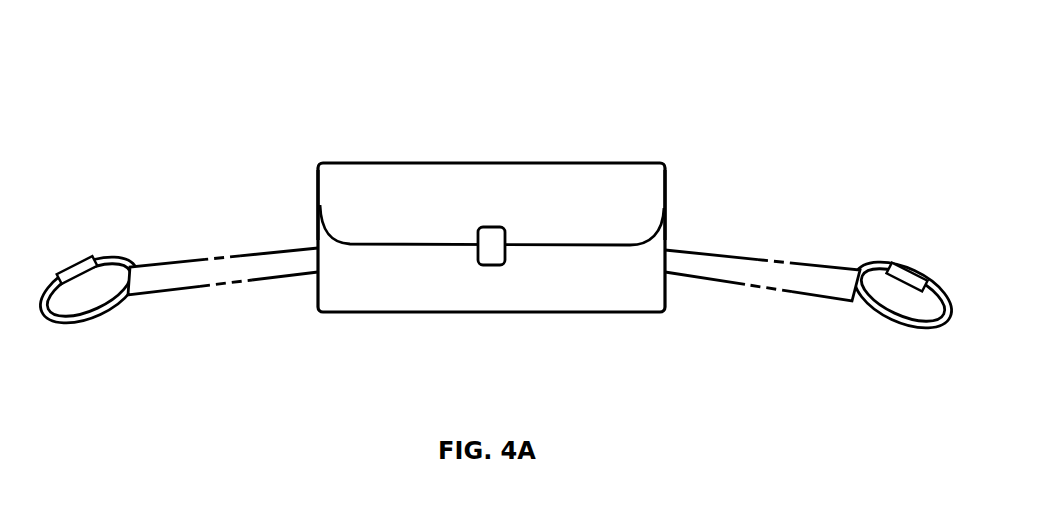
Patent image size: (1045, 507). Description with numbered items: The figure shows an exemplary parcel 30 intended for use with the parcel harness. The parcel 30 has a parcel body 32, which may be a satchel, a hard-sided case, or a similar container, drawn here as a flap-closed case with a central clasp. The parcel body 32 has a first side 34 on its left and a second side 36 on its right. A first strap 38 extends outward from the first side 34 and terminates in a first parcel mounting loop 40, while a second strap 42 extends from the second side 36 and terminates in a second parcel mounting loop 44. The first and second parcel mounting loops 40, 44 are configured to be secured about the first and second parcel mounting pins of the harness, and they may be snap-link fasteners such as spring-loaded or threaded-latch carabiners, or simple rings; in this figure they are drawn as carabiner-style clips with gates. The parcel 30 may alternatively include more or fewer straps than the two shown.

The parcel 30 is at (623, 112).
The parcel body 32 is at (610, 267).
The first side 34 is at (318, 186).
The second side 36 is at (665, 186).
The first strap 38 is at (175, 280).
The first parcel mounting loop 40 is at (83, 318).
The second strap 42 is at (813, 288).
The second parcel mounting loop 44 is at (923, 328).